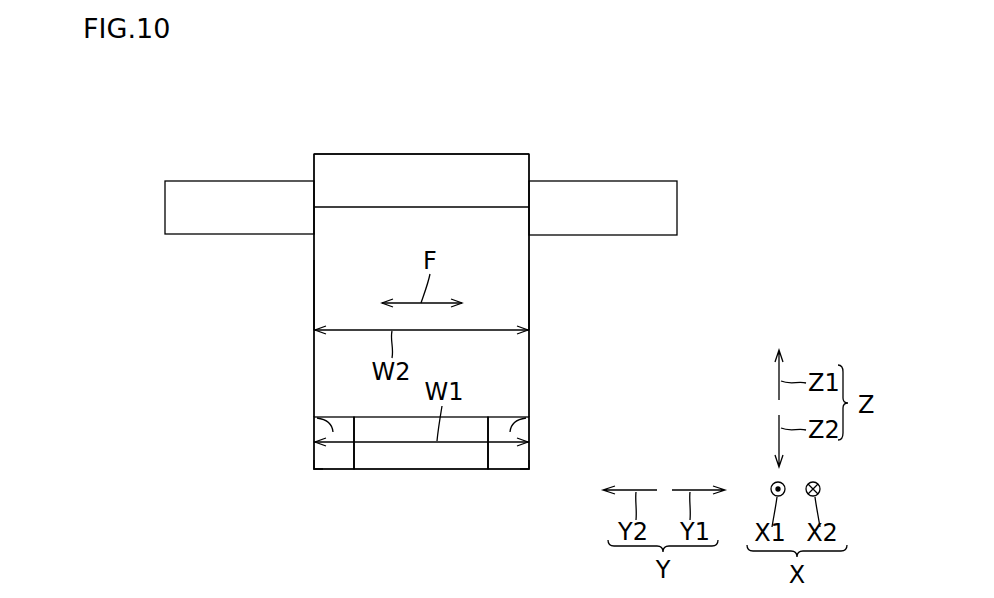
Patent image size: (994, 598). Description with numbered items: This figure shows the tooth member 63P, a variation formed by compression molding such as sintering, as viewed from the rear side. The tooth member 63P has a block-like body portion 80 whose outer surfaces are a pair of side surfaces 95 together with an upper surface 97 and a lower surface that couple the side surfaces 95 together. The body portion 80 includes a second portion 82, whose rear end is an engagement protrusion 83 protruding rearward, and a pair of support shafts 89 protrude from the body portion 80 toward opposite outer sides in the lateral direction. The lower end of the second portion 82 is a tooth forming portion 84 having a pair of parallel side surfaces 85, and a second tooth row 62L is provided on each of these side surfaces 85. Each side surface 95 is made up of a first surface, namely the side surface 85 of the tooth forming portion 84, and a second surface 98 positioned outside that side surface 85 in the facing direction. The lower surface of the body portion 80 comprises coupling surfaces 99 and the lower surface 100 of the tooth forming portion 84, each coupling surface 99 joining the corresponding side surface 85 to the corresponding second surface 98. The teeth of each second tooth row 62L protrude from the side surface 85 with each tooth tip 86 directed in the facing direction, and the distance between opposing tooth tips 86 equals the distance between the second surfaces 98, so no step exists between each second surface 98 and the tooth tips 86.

The tooth member 63P is at (419, 327).
The body portion 80 is at (360, 152).
The upper surface 97 is at (416, 154).
The engagement protrusion 83 is at (478, 164).
The support shafts 89 is at (173, 190).
The second portion 82 is at (330, 238).
The side surfaces 95 is at (312, 289).
The second surface 98 is at (313, 352).
The coupling surfaces 99 is at (316, 419).
The tooth tip 86 is at (313, 458).
The tooth forming portion 84 is at (396, 460).
The lower surface of the tooth forming portion 100 is at (448, 470).
The side surfaces 85 is at (343, 455).
The second tooth rows 62L is at (324, 474).